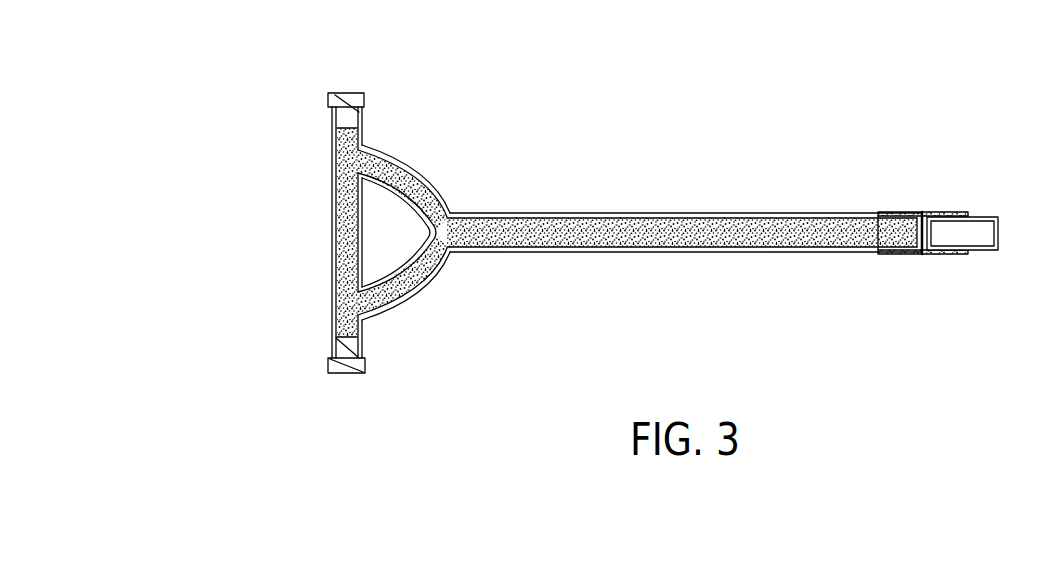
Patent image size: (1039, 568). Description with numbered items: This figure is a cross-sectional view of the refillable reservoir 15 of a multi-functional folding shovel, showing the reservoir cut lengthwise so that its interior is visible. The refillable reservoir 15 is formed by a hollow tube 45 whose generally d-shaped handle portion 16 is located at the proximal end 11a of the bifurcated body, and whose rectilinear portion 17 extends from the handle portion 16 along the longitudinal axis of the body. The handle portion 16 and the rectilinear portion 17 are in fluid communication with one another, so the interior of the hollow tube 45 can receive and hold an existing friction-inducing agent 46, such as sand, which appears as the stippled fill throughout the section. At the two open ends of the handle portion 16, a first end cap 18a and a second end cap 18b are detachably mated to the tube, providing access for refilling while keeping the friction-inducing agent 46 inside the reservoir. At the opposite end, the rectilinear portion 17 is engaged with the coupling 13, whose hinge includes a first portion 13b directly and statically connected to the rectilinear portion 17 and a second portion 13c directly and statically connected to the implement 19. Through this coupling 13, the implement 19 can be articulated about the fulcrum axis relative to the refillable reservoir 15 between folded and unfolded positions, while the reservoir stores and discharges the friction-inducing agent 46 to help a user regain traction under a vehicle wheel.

The proximal end 11a is at (319, 226).
The coupling 13 is at (950, 230).
The first portion 13b is at (908, 254).
The second portion 13c is at (950, 254).
The refillable reservoir 15 is at (684, 208).
The handle portion 16 is at (423, 179).
The rectilinear portion 17 is at (684, 238).
The first end cap 18a is at (345, 368).
The second end cap 18b is at (352, 100).
The implement 19 is at (978, 253).
The hollow tube 45 is at (576, 256).
The friction-inducing agent 46 is at (684, 245).